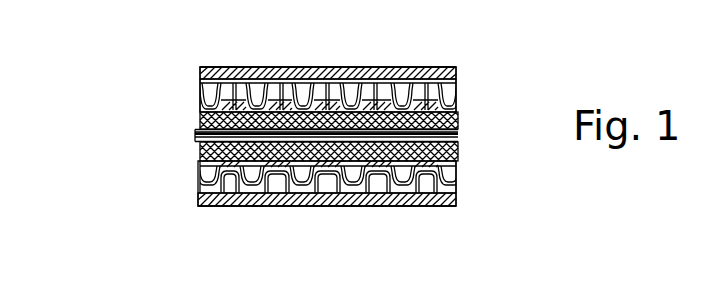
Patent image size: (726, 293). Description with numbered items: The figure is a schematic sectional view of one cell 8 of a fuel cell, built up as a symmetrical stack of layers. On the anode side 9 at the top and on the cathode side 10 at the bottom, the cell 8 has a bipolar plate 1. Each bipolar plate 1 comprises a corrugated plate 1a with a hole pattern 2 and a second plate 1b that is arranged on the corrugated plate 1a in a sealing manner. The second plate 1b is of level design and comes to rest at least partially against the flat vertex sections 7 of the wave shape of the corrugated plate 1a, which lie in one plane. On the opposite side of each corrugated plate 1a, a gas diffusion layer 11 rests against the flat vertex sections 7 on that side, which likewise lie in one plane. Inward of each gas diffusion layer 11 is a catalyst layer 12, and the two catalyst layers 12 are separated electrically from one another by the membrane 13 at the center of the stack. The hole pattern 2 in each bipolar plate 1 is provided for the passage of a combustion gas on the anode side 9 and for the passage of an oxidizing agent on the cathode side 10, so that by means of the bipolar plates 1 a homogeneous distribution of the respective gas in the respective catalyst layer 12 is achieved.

The bipolar plate 1 is at (465, 70).
The corrugated plate 1a is at (453, 96).
The second plate 1b is at (388, 69).
The hole pattern 2 is at (248, 88).
The flat vertex sections 7 is at (298, 70).
The cell 8 is at (175, 70).
The anode side 9 is at (335, 56).
The cathode side 10 is at (350, 215).
The gas diffusion layer 11 is at (458, 128).
The catalyst layer 12 is at (200, 127).
The membrane 13 is at (200, 136).